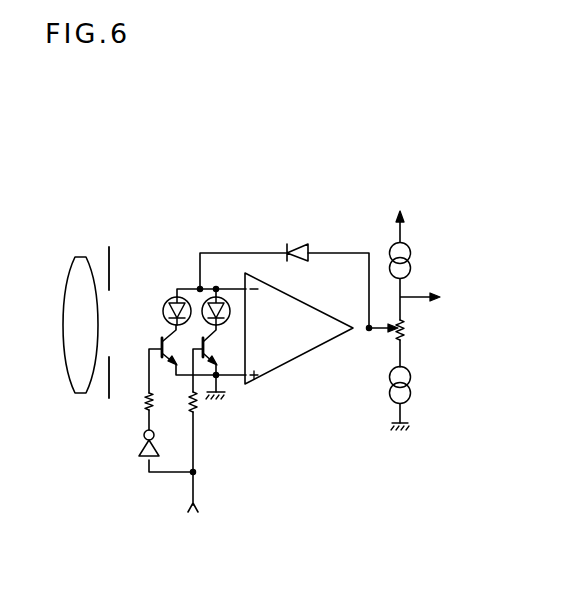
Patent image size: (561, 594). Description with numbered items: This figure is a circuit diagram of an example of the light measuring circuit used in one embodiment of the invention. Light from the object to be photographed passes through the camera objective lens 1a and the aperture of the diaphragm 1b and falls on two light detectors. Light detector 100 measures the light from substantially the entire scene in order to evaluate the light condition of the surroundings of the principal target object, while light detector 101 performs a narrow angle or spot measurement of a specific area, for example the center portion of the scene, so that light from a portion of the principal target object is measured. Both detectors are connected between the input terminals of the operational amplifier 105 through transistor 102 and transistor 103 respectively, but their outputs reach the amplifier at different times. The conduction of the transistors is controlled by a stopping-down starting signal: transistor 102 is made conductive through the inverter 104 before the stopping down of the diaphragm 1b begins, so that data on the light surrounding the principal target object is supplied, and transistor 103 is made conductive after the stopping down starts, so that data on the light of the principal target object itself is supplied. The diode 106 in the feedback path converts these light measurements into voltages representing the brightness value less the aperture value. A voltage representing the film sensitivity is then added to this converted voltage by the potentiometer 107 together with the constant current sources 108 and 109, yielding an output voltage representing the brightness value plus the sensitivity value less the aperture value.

The camera objective lens 1a is at (80, 259).
The diaphragm 1b is at (112, 265).
The light detector 100 is at (171, 298).
The light detector 101 is at (221, 297).
The transistor 102 is at (160, 342).
The transistor 103 is at (208, 350).
The inverter 104 is at (146, 445).
The operational amplifier 105 is at (291, 361).
The diode 106 is at (296, 243).
The potentiometer 107 is at (408, 333).
The constant current source 108 is at (412, 262).
The constant current source 109 is at (412, 389).